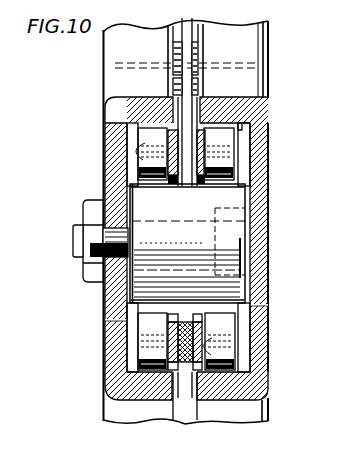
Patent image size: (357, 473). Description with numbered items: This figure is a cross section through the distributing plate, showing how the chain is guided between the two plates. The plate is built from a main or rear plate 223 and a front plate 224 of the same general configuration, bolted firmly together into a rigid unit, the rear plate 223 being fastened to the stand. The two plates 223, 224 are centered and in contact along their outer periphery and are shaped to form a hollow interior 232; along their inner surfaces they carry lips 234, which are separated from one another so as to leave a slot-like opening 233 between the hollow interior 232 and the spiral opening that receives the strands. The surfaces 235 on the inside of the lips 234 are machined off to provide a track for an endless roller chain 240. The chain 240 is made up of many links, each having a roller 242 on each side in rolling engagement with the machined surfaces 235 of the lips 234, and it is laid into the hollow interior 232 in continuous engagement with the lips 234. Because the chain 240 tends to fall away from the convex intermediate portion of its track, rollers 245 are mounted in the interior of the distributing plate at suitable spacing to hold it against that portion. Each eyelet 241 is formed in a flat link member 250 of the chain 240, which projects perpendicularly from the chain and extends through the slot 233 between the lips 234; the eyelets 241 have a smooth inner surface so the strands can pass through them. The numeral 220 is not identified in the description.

The outer tube 220 is at (300, 17).
The rear plate 223 is at (118, 405).
The front plate 224 is at (249, 407).
The hollow interior 232 is at (133, 303).
The slot-like opening 233 is at (185, 28).
The lips 234 is at (206, 110).
The machined surfaces 235 is at (128, 125).
The endless roller chain 240 is at (206, 134).
The eyelets 241 is at (200, 51).
The rollers 242 is at (140, 152).
The rollers 245 is at (193, 241).
The flat link member 250 is at (186, 87).